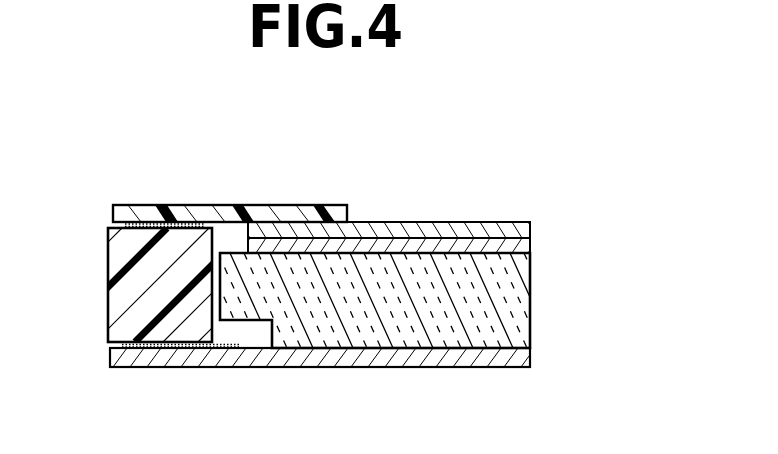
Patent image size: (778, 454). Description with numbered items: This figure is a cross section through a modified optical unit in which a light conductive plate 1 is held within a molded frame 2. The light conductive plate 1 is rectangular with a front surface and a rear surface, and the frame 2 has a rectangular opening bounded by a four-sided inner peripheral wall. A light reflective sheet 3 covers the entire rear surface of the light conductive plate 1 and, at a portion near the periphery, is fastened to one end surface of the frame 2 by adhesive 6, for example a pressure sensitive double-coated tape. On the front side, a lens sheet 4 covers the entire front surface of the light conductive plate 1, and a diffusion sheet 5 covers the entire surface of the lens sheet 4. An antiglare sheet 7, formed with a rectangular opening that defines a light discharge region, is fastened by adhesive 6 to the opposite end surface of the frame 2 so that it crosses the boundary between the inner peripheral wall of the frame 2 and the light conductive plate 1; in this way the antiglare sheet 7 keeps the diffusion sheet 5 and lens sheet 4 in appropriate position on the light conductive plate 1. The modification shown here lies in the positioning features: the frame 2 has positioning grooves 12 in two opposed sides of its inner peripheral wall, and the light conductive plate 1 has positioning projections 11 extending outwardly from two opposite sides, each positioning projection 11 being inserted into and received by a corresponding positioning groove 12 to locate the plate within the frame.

The light conductive plate 1 is at (518, 303).
The frame 2 is at (128, 252).
The light reflective sheet 3 is at (381, 349).
The lens sheet 4 is at (479, 240).
The diffusion sheet 5 is at (396, 222).
The adhesive 6 is at (186, 207).
The antiglare sheet 7 is at (298, 207).
The positioning projection 11 is at (235, 300).
The positioning groove 12 is at (230, 300).